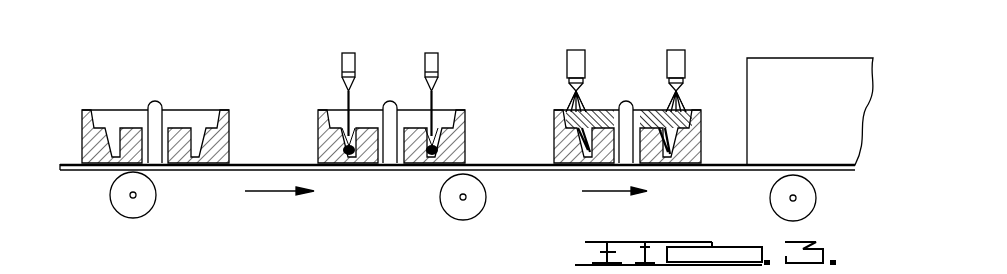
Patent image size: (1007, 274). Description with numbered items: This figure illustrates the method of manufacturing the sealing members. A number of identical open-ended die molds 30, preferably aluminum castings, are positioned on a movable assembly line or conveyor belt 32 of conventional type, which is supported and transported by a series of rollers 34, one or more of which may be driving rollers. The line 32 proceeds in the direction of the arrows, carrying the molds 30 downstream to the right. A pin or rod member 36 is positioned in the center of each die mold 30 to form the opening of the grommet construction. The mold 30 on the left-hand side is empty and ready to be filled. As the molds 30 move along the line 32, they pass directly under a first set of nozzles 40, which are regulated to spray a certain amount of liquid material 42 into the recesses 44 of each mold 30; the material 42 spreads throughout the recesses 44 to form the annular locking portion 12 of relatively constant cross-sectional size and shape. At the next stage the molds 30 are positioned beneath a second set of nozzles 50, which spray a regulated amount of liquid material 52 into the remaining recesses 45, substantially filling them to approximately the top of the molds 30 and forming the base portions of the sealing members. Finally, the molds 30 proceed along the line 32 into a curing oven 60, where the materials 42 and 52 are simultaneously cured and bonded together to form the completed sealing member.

The annular locking portion 12 is at (353, 149).
The die mold 30 is at (220, 150).
The conveyor belt 32 is at (396, 172).
The rollers 34 is at (122, 204).
The pin or rod member 36 is at (155, 99).
The first set of nozzles 40 is at (425, 68).
The material 42 is at (347, 98).
The recesses 44 is at (437, 150).
The remaining recesses 45 is at (566, 118).
The second set of nozzles 50 is at (585, 58).
The material 52 is at (570, 96).
The curing oven 60 is at (816, 60).